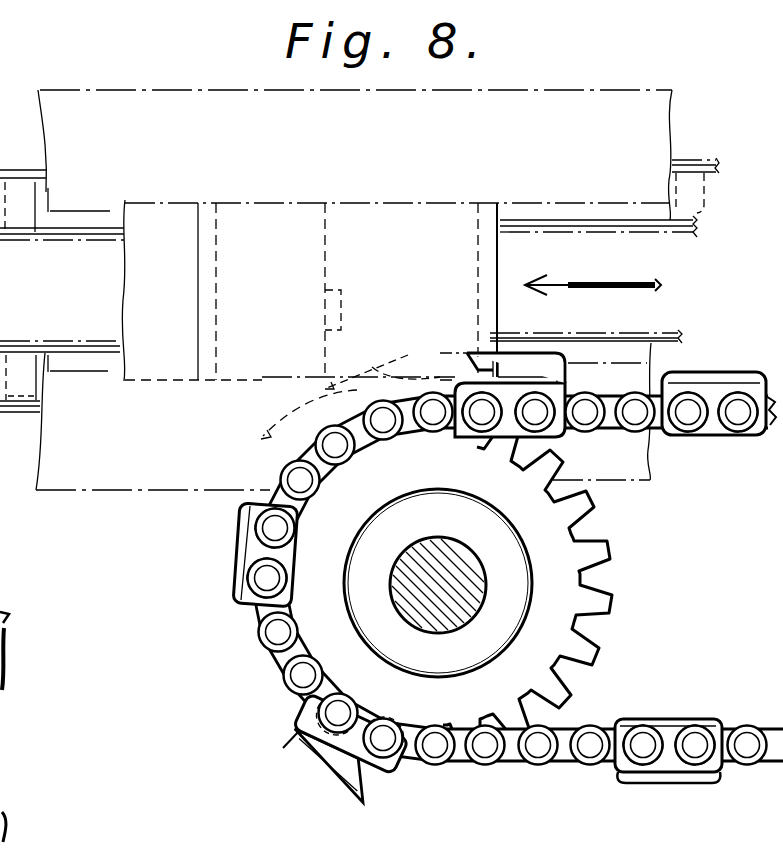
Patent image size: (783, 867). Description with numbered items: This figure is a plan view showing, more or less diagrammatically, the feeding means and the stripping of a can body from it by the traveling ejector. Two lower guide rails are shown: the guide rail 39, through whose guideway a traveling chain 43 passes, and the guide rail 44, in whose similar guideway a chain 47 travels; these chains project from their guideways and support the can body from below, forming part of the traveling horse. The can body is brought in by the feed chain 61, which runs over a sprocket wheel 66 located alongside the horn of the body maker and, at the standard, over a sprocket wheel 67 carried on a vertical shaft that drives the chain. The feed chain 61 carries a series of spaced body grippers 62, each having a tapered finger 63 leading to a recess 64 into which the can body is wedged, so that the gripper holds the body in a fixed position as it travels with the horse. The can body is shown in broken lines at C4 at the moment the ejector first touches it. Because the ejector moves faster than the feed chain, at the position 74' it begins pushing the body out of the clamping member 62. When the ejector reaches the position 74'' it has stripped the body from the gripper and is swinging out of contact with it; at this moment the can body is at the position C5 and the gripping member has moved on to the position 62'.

The guide rail 44 is at (355, 155).
The chain 47 is at (62, 183).
The sprocket wheel 66 is at (0, 292).
The traveling chain 43 is at (54, 360).
The guide rail 39 is at (343, 416).
The ejector position 74' is at (604, 250).
The ejector position 74'' is at (372, 281).
The can body position C5 is at (325, 218).
The can body position C4 is at (500, 208).
The gripping member position 62' is at (350, 375).
The body gripper 62 is at (425, 554).
The tapered finger 63 is at (446, 399).
The recess 64 is at (495, 372).
The sprocket wheel 67 is at (572, 507).
The feed chain 61 is at (588, 742).